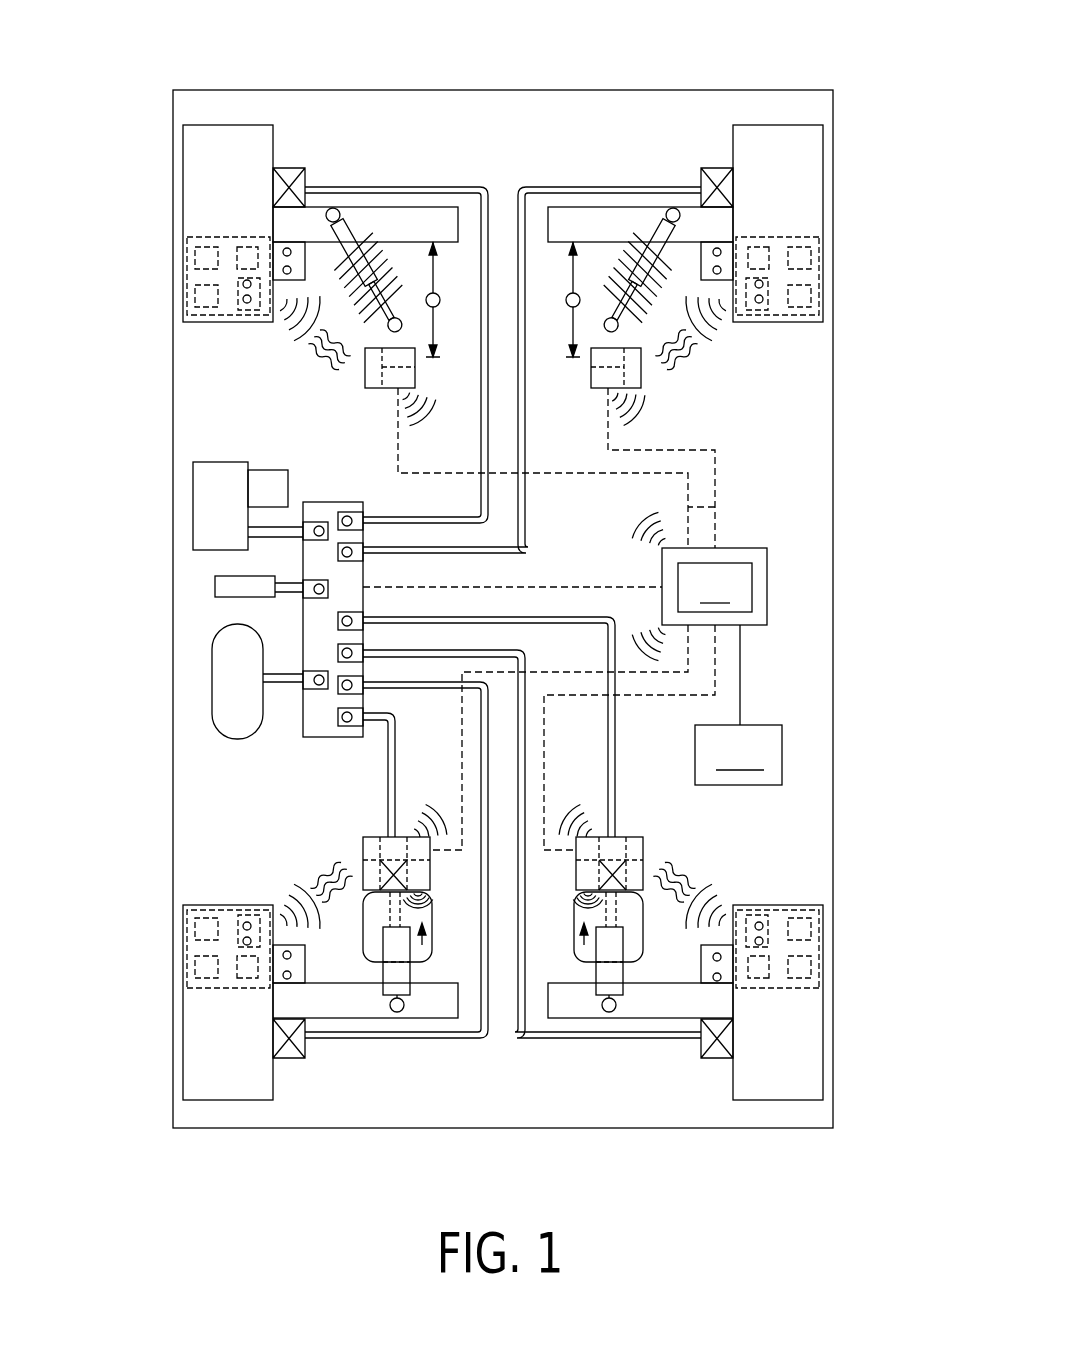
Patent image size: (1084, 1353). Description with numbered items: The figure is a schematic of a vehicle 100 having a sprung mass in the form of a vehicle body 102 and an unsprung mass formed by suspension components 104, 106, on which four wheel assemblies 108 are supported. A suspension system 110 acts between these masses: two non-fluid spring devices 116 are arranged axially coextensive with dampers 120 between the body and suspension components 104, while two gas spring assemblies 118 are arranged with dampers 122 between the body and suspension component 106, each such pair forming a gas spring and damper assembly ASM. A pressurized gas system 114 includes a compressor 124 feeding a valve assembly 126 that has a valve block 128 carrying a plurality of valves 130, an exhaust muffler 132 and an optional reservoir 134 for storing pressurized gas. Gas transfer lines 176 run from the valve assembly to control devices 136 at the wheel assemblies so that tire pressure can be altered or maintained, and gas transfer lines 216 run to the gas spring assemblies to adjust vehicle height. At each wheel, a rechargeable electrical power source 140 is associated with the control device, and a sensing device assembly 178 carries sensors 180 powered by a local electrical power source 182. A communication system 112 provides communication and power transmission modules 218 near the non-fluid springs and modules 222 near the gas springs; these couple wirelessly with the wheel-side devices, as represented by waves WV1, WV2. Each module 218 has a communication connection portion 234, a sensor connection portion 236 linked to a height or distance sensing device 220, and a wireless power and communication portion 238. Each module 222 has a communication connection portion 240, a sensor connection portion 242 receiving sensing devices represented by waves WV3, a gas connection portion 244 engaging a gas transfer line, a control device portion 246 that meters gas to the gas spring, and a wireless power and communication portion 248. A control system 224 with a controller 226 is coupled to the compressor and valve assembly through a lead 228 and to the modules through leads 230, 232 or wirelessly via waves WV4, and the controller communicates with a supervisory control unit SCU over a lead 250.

The vehicle 100 is at (848, 93).
The vehicle body 102 is at (765, 88).
The suspension component 104 is at (385, 223).
The suspension component 106 is at (483, 1040).
The wheel assembly 108 is at (196, 155).
The suspension system 110 is at (785, 463).
The communication system 112 is at (767, 445).
The pressurized gas system 114 is at (198, 450).
The non-fluid spring device 116 is at (377, 253).
The gas spring assembly 118 is at (432, 945).
The damper 120 is at (350, 222).
The damper 122 is at (387, 978).
The compressor 124 is at (203, 507).
The valve assembly 126 is at (320, 497).
The valve block 128 is at (302, 712).
The valve 130 is at (340, 652).
The muffler 132 is at (220, 585).
The reservoir 134 is at (222, 682).
The control device 136 is at (289, 168).
The rechargeable electrical power source 140 is at (200, 232).
The gas transfer line 176 is at (475, 186).
The sensing device assembly 178 is at (277, 243).
The sensor 180 is at (198, 292).
The local electrical power source 182 is at (240, 302).
The gas transfer line 216 is at (527, 490).
The communication and power transmission module 218 is at (357, 397).
The height or distance sensing device 220 is at (445, 245).
The communication and power transmission module 222 is at (357, 838).
The control system 224 is at (772, 537).
The controller 226 is at (715, 587).
The conductor or lead 228 is at (482, 587).
The conductor or lead 230 is at (713, 480).
The conductor or lead 232 is at (713, 690).
The communication connection portion 234 is at (390, 390).
The sensor connection portion 236 is at (415, 362).
The wireless power and communication portion 238 is at (365, 368).
The communication connection portion 240 is at (428, 890).
The sensor connection portion 242 is at (500, 1012).
The gas connection portion 244 is at (383, 835).
The control device portion 246 is at (380, 930).
The wireless power and communication portion 248 is at (373, 853).
The conductor or lead 250 is at (740, 643).
The waves WV1 is at (317, 354).
The waves WV2 is at (277, 335).
The waves WV3 is at (420, 957).
The waves WV4 is at (415, 448).
The gas spring and damper assembly ASM is at (373, 973).
The supervisory control unit SCU is at (738, 705).